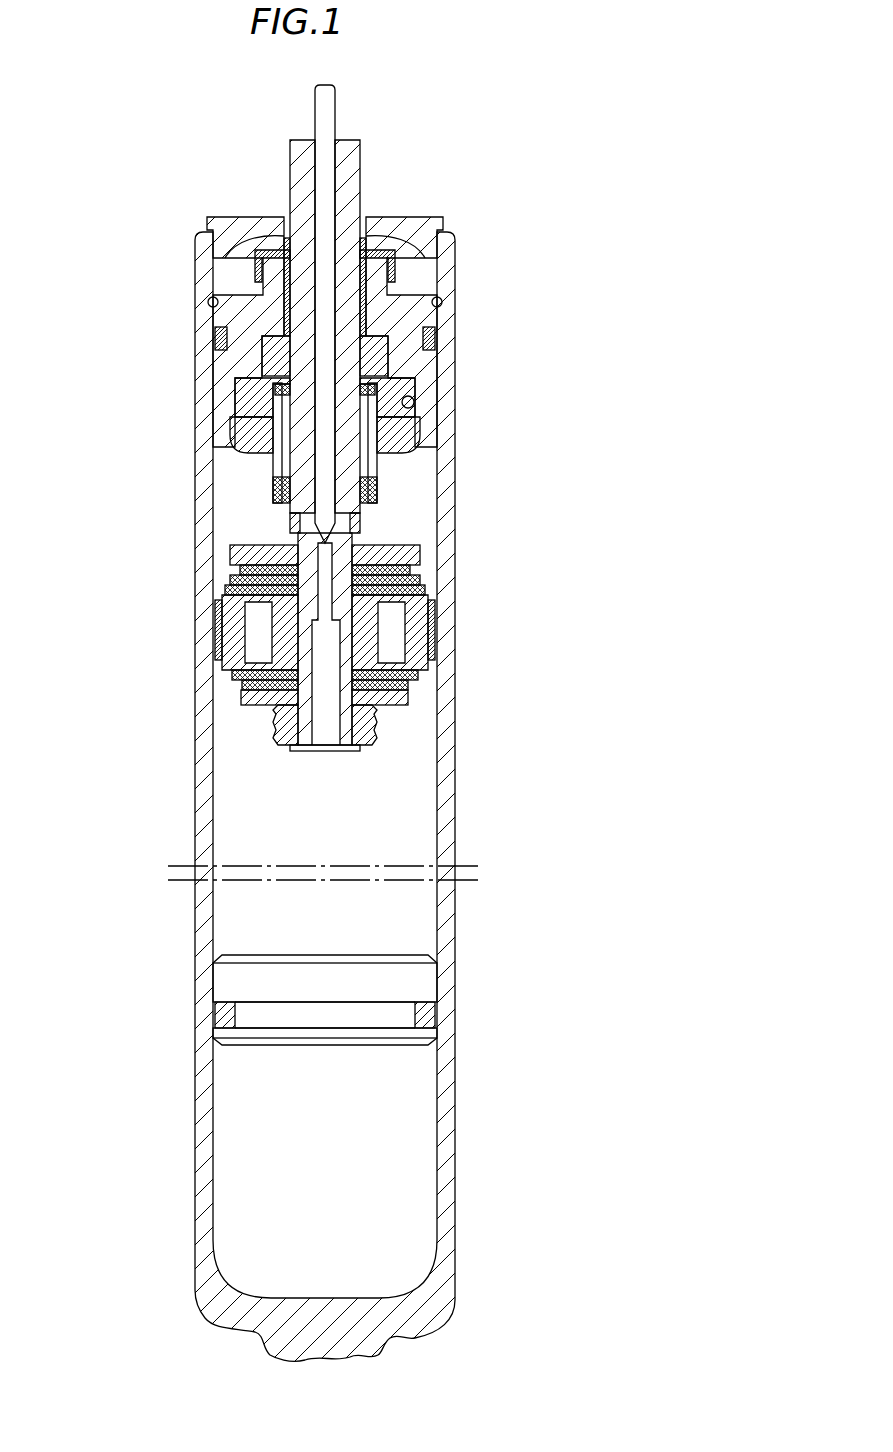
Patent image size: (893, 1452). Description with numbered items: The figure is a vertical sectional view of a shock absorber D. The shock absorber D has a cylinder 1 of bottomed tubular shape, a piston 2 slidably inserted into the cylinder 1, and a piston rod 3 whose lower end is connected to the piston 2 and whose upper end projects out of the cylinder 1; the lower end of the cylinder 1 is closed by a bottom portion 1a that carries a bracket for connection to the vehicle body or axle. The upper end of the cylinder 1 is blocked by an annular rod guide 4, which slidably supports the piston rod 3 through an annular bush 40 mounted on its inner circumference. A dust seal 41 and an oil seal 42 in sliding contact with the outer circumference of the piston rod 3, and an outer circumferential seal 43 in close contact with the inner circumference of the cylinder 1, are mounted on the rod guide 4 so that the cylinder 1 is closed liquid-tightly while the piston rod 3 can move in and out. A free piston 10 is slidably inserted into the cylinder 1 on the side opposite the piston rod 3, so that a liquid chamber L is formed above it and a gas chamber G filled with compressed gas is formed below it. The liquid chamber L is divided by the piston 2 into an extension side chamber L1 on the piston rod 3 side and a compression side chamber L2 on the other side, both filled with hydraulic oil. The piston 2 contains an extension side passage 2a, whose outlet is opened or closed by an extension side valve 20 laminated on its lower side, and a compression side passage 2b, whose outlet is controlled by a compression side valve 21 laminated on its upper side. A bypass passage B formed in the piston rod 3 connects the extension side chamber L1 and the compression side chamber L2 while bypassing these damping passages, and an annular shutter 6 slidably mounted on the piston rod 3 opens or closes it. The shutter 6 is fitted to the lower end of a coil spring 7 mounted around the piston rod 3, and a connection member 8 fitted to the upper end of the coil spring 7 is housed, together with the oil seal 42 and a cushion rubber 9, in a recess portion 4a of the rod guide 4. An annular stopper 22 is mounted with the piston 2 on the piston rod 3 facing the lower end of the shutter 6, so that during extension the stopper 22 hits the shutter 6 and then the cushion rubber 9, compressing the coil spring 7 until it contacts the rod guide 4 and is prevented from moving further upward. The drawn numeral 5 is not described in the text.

The cylinder 1 is at (457, 800).
The bottom portion 1a is at (402, 1335).
The piston 2 is at (439, 668).
The extension side passage 2a is at (258, 630).
The compression side passage 2b is at (390, 633).
The piston rod 3 is at (361, 175).
The rod guide 4 is at (439, 352).
The recess portion 4a is at (415, 403).
The control rod 5 is at (314, 110).
The shutter 6 is at (275, 495).
The coil spring 7 is at (380, 470).
The connection member 8 is at (250, 400).
The cushion rubber 9 is at (250, 440).
The free piston 10 is at (422, 986).
The extension side valve 20 is at (262, 690).
The compression side valve 21 is at (400, 578).
The stopper 22 is at (250, 555).
The bush 40 is at (400, 292).
The dust seal 41 is at (280, 240).
The oil seal 42 is at (264, 356).
The outer circumferential seal 43 is at (214, 338).
The bypass passage B is at (325, 753).
The shock absorber D is at (167, 221).
The gas chamber G is at (308, 1188).
The liquid chamber L is at (213, 726).
The extension side chamber L1 is at (405, 517).
The compression side chamber L2 is at (355, 847).